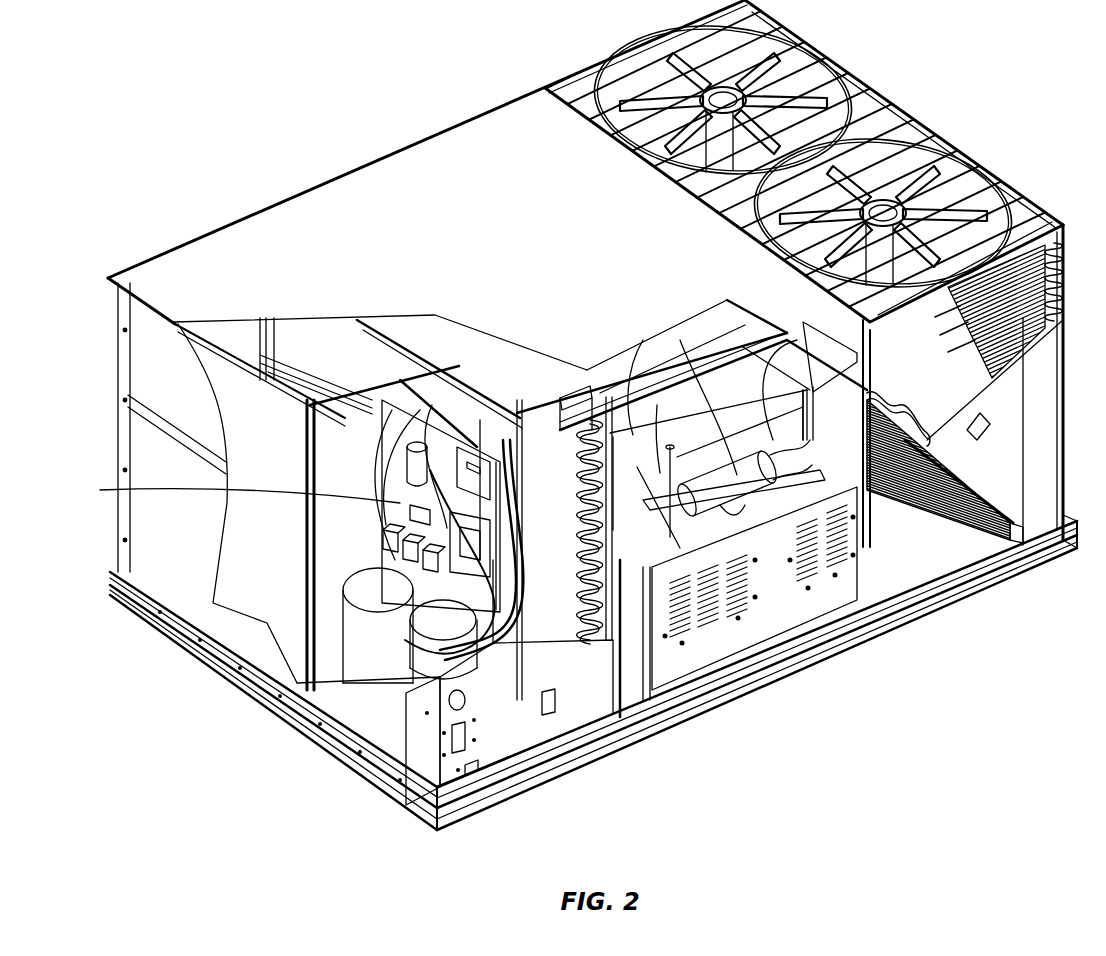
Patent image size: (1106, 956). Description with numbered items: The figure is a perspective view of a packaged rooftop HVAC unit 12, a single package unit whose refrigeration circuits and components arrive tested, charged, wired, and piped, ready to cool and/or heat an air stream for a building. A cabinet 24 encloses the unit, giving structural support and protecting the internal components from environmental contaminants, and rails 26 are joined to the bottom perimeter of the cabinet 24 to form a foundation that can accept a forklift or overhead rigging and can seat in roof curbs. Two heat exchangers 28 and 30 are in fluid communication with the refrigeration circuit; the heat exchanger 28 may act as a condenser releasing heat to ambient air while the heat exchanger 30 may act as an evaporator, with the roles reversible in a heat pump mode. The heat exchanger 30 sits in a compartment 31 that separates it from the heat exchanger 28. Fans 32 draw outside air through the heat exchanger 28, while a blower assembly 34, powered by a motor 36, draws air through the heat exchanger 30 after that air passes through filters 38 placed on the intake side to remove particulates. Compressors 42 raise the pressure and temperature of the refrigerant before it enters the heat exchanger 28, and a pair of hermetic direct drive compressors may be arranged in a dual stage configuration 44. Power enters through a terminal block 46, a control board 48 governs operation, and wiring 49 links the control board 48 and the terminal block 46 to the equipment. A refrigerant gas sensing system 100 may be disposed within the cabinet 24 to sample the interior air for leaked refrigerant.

The HVAC unit 12 is at (318, 135).
The cabinet 24 is at (160, 527).
The rails 26 is at (190, 648).
The heat exchanger 28 is at (1063, 272).
The heat exchanger 30 is at (597, 640).
The compartment 31 is at (635, 440).
The fans 32 is at (880, 205).
The blower assembly 34 is at (735, 470).
The motor 36 is at (700, 470).
The filters 38 is at (548, 450).
The compressors 42 is at (350, 645).
The dual stage configuration 44 is at (348, 581).
The terminal block 46 is at (420, 520).
The control board 48 is at (470, 400).
The wiring 49 is at (575, 410).
The refrigerant gas sensing system 100 is at (560, 695).